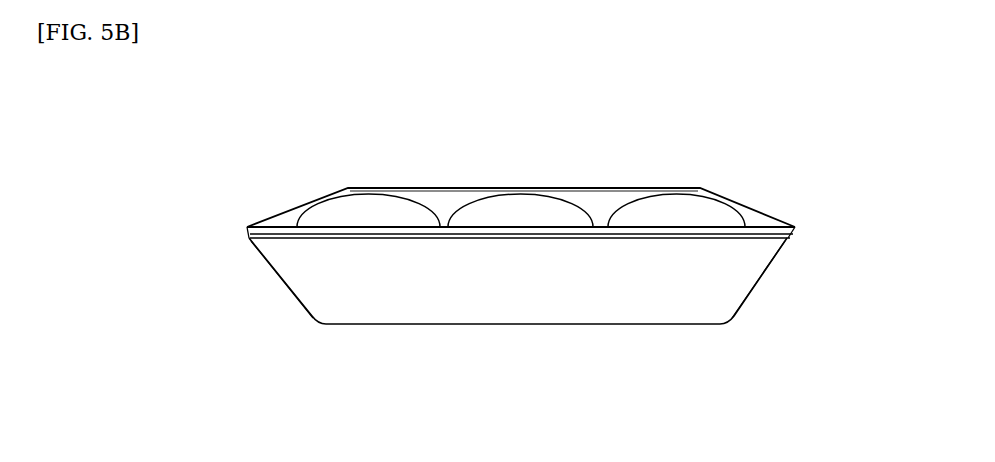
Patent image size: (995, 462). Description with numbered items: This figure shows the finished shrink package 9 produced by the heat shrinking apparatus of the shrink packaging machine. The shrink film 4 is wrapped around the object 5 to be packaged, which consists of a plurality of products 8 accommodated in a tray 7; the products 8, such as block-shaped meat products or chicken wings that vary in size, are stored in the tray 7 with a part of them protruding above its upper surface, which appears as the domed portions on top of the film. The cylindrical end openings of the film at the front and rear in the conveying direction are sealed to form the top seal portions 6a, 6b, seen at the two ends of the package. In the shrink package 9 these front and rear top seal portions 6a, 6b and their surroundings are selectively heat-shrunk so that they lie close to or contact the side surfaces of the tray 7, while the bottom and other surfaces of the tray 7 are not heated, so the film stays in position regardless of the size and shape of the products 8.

The shrink film 4 is at (703, 189).
The object to be packaged 5 is at (426, 328).
The top seal portion 6a is at (780, 250).
The top seal portion 6b is at (262, 257).
The tray 7 is at (507, 324).
The products 8 is at (362, 188).
The shrink package 9 is at (550, 157).